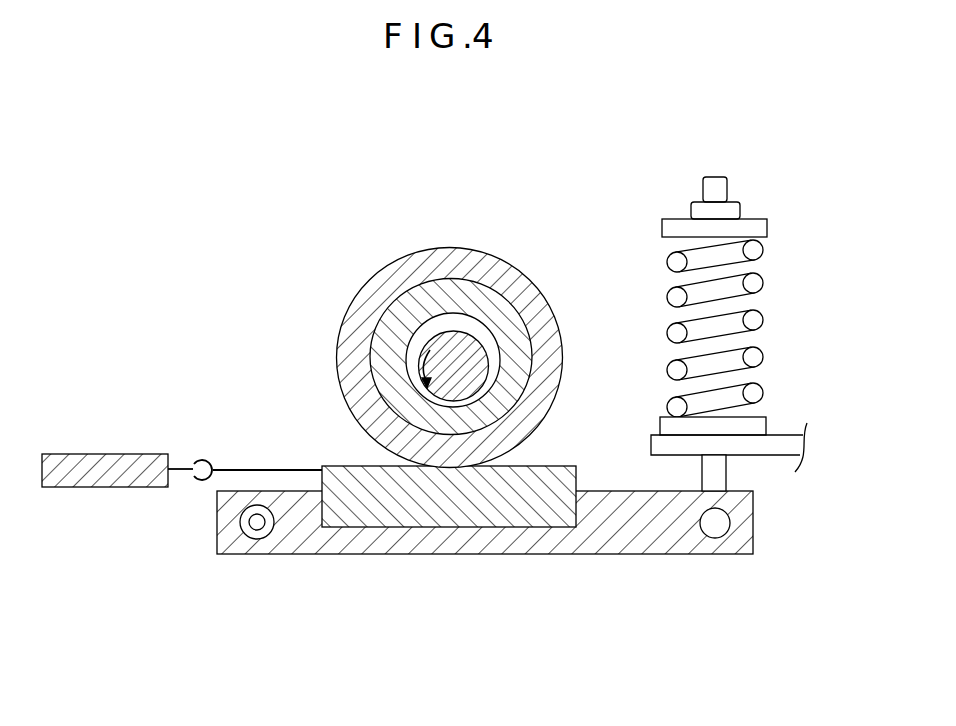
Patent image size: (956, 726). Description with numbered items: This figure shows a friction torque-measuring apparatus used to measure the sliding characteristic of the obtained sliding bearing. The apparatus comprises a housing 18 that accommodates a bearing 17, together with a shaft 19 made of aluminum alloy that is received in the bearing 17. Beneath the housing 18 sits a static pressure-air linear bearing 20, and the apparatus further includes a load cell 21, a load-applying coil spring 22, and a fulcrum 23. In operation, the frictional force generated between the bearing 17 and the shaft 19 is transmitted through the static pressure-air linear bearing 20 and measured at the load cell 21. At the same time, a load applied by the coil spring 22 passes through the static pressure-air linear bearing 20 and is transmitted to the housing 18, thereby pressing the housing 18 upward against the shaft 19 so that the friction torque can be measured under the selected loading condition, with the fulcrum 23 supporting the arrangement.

The bearing 17 is at (382, 327).
The housing 18 is at (462, 263).
The shaft 19 is at (472, 352).
The static pressure-air linear bearing 20 is at (525, 518).
The load cell 21 is at (127, 455).
The load-applying coil spring 22 is at (758, 322).
The fulcrum 23 is at (262, 540).